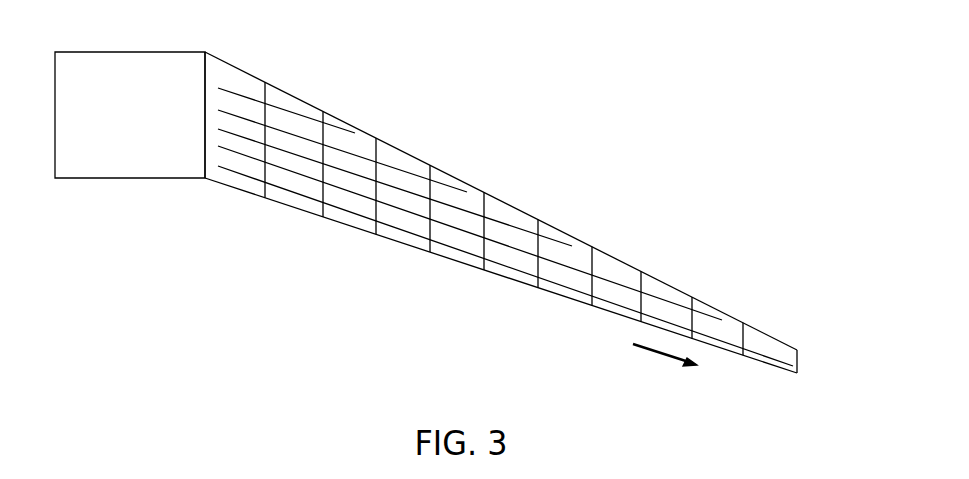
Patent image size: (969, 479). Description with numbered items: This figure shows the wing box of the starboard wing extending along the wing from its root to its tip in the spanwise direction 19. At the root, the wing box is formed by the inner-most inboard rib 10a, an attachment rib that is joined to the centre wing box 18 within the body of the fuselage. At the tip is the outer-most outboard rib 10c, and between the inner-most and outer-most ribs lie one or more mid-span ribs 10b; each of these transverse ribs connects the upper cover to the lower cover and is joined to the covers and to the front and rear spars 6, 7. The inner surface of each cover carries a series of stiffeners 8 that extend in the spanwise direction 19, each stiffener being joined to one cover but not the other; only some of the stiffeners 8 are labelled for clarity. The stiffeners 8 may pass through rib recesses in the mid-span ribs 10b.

The centre wing box 18 is at (165, 78).
The inner-most inboard rib 10a is at (205, 110).
The mid-span ribs 10b is at (268, 120).
The outer-most outboard rib 10c is at (799, 356).
The front spar 6 is at (405, 151).
The rear spar 7 is at (388, 239).
The stiffeners 8 is at (240, 92).
The spanwise direction 19 is at (658, 357).